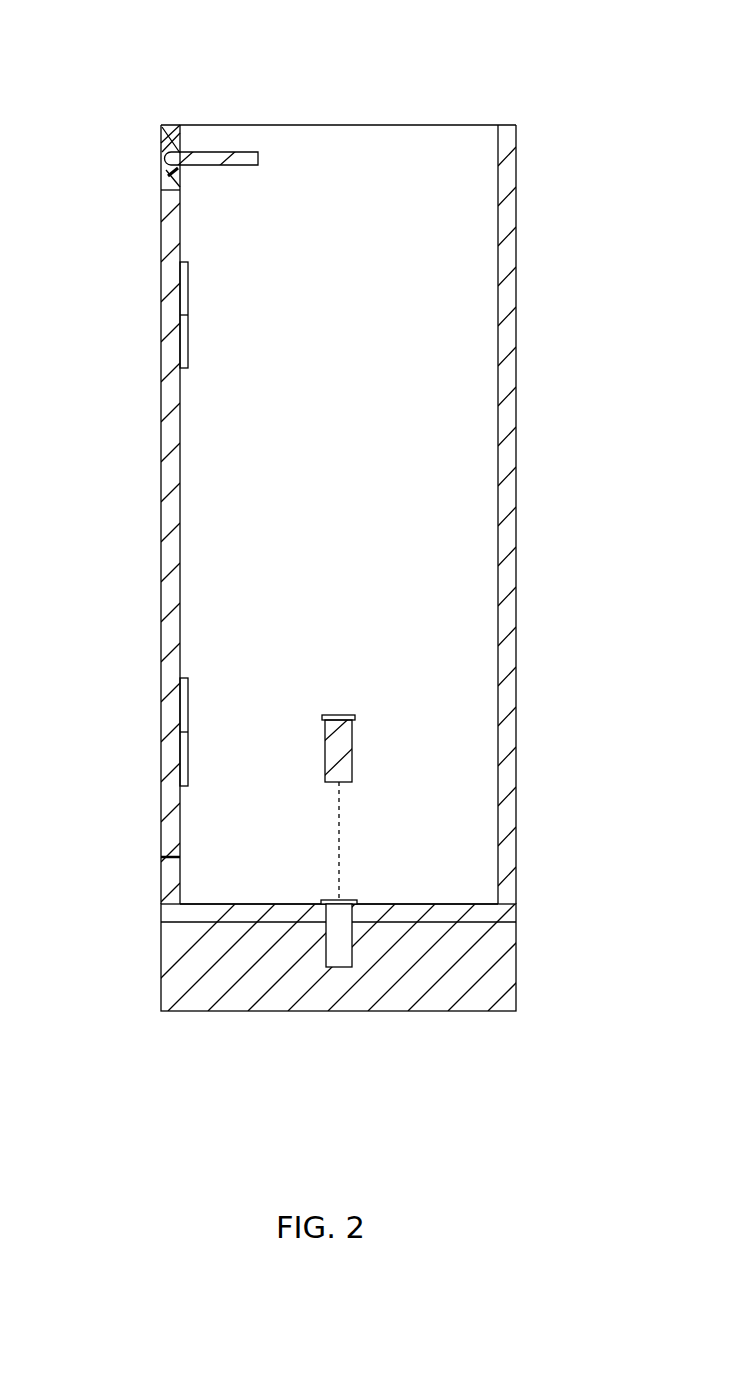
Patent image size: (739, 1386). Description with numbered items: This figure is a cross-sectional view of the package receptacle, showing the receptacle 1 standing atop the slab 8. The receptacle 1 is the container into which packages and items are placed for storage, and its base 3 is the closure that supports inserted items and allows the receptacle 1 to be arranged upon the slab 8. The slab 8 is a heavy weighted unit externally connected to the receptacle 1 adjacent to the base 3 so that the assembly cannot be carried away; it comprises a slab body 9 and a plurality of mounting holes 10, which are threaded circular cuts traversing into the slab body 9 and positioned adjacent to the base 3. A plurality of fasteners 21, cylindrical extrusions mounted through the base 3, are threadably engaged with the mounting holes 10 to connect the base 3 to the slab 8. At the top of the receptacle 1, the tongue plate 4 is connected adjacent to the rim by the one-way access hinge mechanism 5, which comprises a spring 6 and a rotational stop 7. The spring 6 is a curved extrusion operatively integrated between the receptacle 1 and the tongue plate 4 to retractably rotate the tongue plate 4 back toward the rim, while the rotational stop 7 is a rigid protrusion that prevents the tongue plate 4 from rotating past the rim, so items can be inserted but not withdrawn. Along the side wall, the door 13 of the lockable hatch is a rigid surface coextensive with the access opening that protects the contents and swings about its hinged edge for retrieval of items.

The receptacle 1 is at (423, 80).
The base 3 is at (226, 880).
The tongue plate 4 is at (258, 156).
The one-way access hinge mechanism 5 is at (192, 142).
The spring 6 is at (177, 173).
The rotational stop 7 is at (168, 138).
The slab 8 is at (508, 1035).
The slab body 9 is at (507, 970).
The plurality of mounting holes 10 is at (340, 957).
The door 13 is at (176, 509).
The plurality of fasteners 21 is at (345, 737).